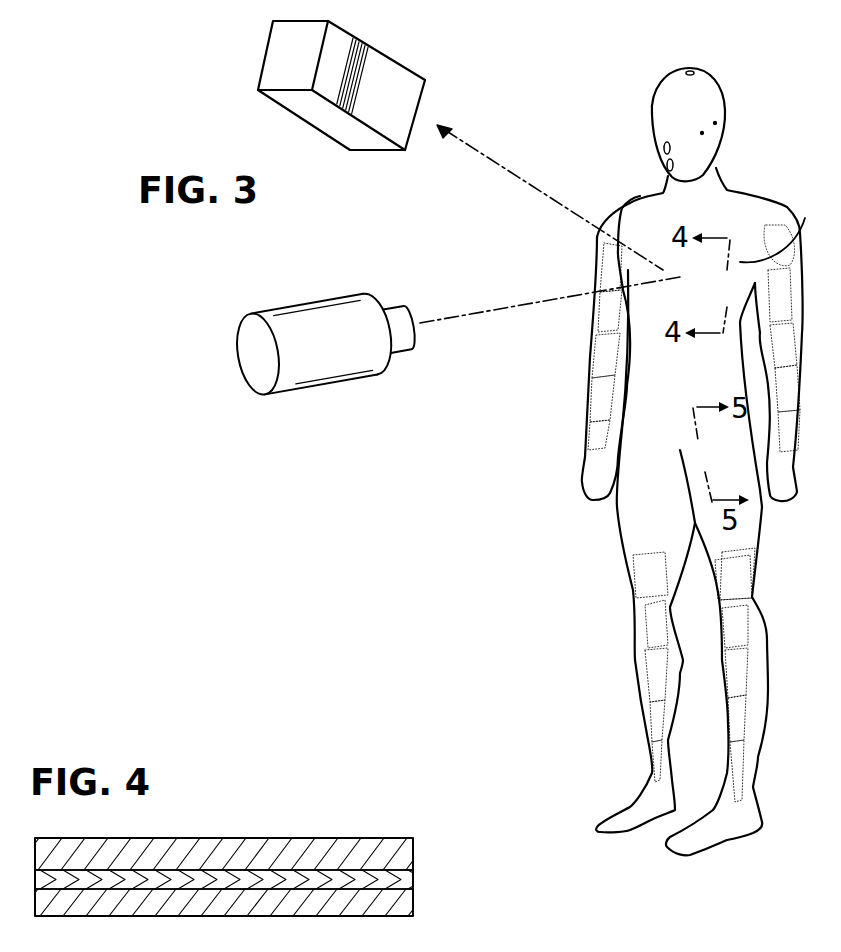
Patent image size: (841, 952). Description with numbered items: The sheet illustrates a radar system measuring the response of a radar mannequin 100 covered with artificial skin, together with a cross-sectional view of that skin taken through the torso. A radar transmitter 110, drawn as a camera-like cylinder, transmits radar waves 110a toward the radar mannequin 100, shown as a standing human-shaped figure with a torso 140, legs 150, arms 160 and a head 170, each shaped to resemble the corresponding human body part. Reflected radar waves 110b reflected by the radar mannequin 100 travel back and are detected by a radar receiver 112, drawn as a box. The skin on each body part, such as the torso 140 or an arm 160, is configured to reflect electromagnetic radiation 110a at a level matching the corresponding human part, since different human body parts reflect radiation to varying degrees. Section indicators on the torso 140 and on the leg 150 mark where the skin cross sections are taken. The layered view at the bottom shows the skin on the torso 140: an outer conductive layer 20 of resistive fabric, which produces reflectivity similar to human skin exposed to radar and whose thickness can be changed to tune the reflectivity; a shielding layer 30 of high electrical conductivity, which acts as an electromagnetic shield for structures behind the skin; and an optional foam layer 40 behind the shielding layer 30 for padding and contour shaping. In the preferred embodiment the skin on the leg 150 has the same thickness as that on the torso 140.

In FIG. 3, the radar mannequin 100 is at (753, 190).
In FIG. 3, the radar transmitter 110 is at (303, 300).
In FIG. 3, the radar waves 110a is at (488, 312).
In FIG. 3, the reflected radar waves 110b is at (513, 171).
In FIG. 3, the radar receiver 112 is at (352, 33).
In FIG. 3, the torso 140 is at (800, 243).
In FIG. 3, the leg 150 is at (765, 528).
In FIG. 3, the arm 160 is at (805, 392).
In FIG. 3, the head 170 is at (693, 67).
In FIG. 4, the conductive layer 20 is at (273, 837).
In FIG. 4, the shielding layer 30 is at (413, 877).
In FIG. 4, the foam layer 40 is at (413, 905).